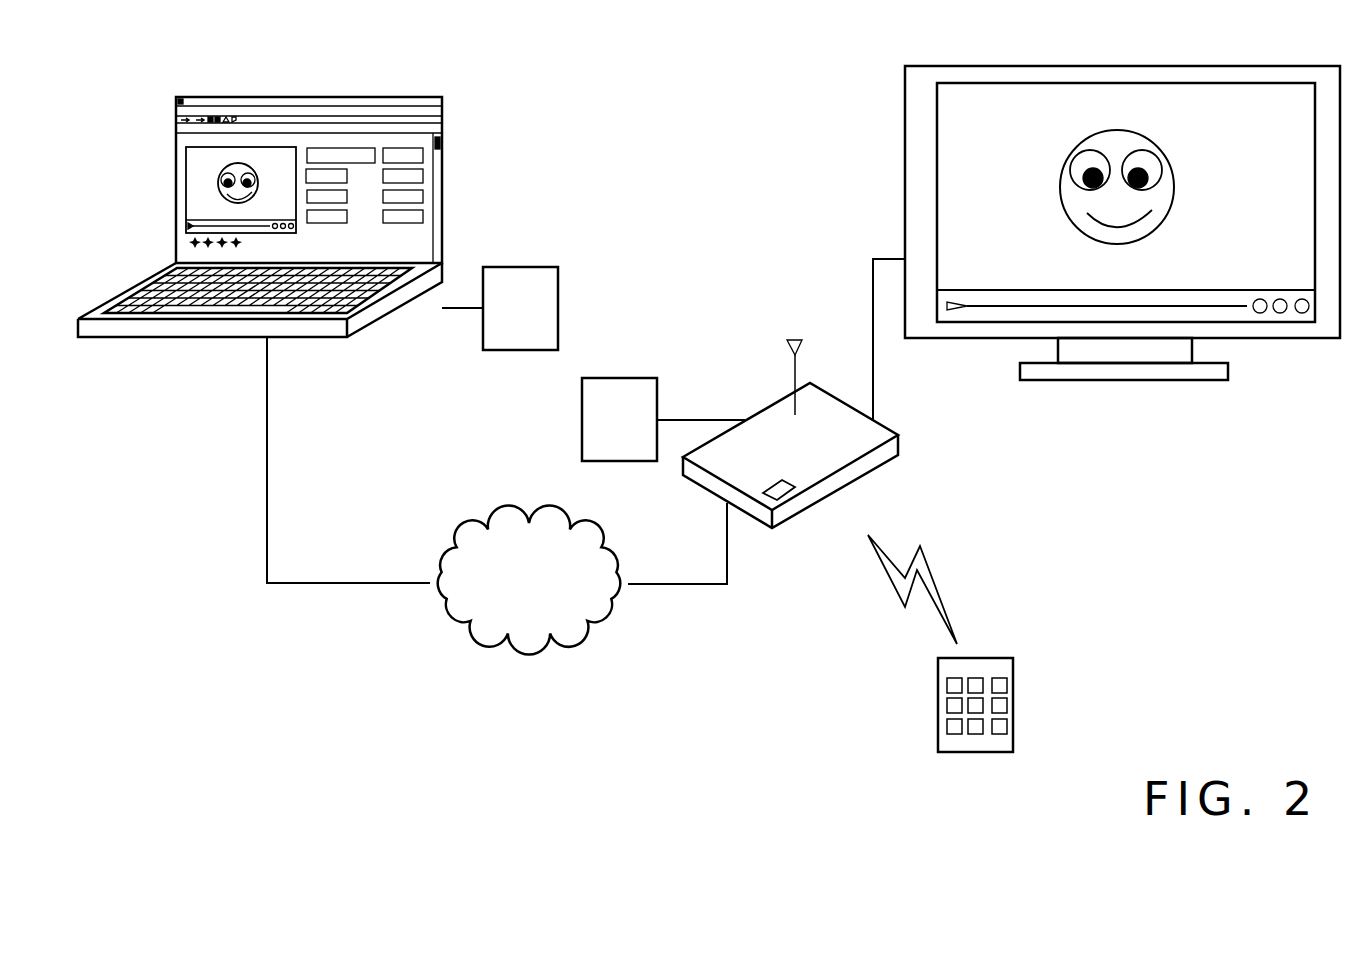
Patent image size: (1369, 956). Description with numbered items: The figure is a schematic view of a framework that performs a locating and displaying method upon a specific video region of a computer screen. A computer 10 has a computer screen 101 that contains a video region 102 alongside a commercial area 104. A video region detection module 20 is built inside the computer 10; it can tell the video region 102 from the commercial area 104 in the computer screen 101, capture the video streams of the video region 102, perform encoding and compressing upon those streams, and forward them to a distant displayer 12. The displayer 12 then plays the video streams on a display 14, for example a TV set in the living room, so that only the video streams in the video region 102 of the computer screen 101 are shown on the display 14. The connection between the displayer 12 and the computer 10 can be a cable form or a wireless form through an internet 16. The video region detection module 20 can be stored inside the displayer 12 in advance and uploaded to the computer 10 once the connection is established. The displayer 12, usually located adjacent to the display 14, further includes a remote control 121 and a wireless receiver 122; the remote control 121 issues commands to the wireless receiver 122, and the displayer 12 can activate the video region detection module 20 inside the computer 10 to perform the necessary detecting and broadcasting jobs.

The computer 10 is at (147, 328).
The computer screen 101 is at (176, 110).
The video region 102 is at (217, 163).
The commercial area 104 is at (423, 246).
The video region detection module 20 is at (548, 267).
The displayer 12 is at (880, 475).
The wireless receiver 122 is at (780, 492).
The remote control 121 is at (997, 658).
The display 14 is at (878, 147).
The internet 16 is at (485, 532).